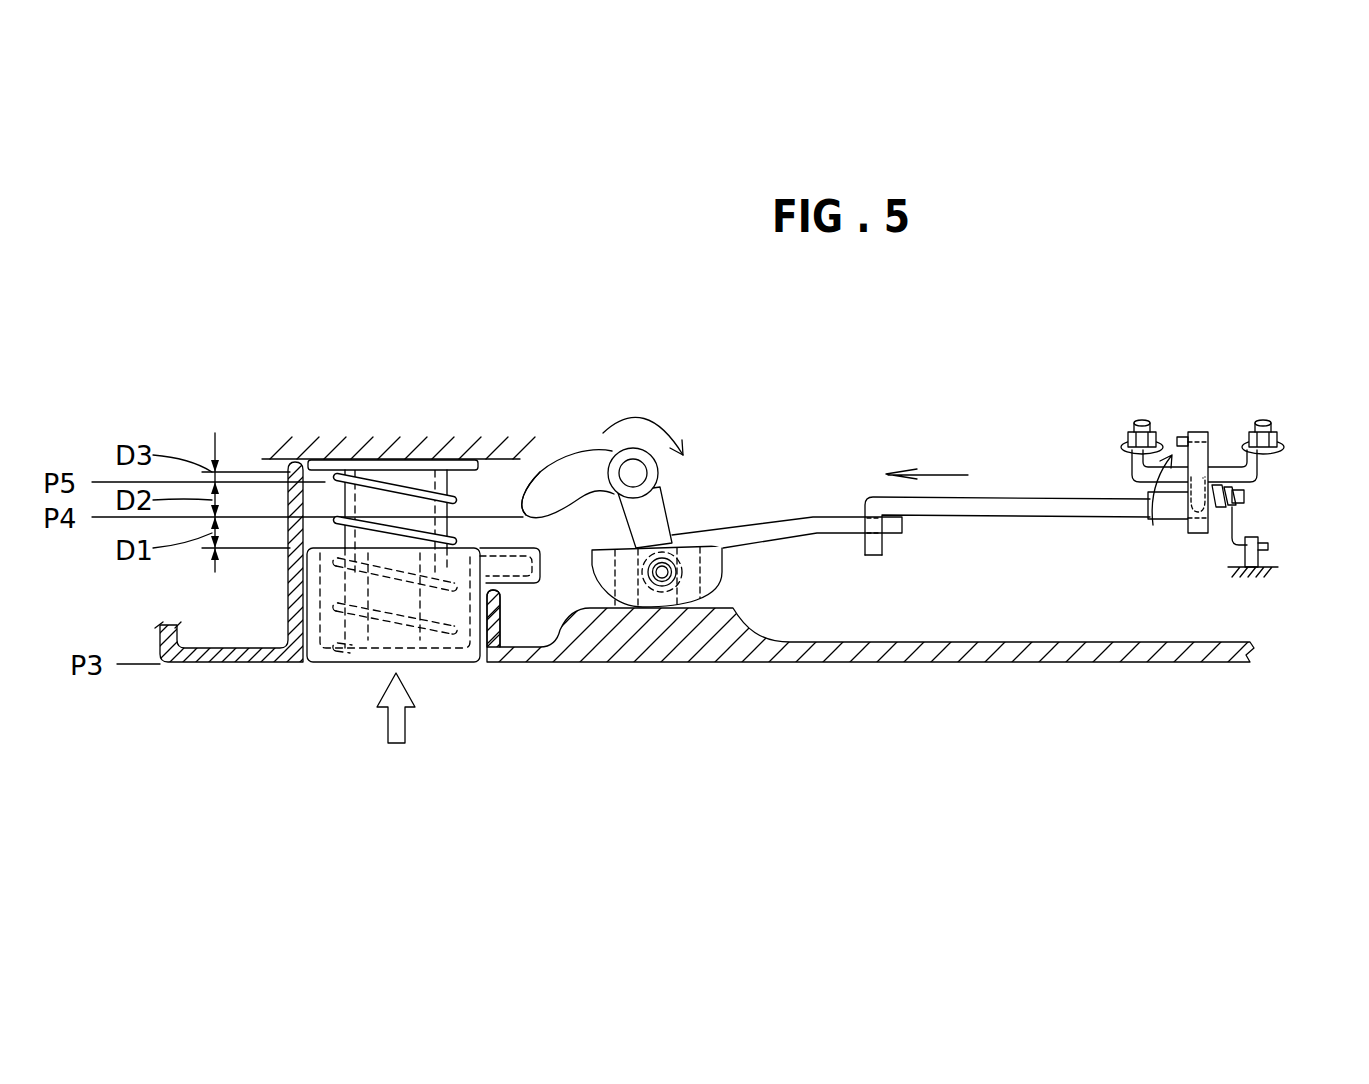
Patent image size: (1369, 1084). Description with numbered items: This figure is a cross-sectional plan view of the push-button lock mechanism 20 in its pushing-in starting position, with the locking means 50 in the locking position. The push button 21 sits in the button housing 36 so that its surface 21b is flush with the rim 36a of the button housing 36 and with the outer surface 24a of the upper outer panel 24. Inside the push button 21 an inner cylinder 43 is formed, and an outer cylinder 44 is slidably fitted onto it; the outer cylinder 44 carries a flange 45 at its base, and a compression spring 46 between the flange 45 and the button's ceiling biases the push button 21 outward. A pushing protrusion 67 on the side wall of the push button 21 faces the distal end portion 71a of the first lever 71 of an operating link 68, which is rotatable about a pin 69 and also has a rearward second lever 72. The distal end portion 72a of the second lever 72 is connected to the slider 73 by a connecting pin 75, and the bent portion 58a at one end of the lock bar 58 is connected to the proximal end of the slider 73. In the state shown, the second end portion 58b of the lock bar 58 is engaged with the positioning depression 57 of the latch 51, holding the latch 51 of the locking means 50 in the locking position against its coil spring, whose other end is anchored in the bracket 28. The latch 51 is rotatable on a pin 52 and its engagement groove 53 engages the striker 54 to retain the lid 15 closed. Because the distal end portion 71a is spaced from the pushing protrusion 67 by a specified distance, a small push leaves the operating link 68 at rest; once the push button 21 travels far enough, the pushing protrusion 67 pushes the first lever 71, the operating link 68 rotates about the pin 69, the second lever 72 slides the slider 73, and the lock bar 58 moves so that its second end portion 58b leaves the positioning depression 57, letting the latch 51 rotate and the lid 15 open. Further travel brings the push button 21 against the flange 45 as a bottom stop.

The lock mechanism 20 is at (555, 348).
The flange 45 is at (323, 458).
The compression spring 46 is at (395, 483).
The outer cylinder 44 is at (438, 476).
The distal end portion of the first lever 71a is at (534, 472).
The first lever 71 is at (578, 458).
The operating link 68 is at (640, 449).
The pin 69 is at (647, 473).
The slider 73 is at (813, 517).
The locking means 50 is at (1132, 405).
The latch 51 is at (1201, 432).
The positioning depression 57 is at (1203, 478).
The striker 54 is at (1267, 467).
The pin 52 is at (1244, 497).
The bracket 28 is at (1257, 560).
The engagement groove 53 is at (1180, 483).
The lock bar 58 is at (1038, 512).
The bent portion 58a is at (872, 555).
The second end portion of the lock bar 58b is at (1187, 500).
The second lever 72 is at (660, 510).
The distal end portion of the second lever 72a is at (677, 588).
The connecting pin 75 is at (658, 590).
The pushing protrusion 67 is at (515, 567).
The lid 15 is at (915, 660).
The upper outer panel 24 is at (1015, 660).
The outer surface of the upper outer panel 24a is at (250, 663).
The button housing 36 is at (320, 578).
The rim of the button housing 36a is at (303, 665).
The push button 21 is at (353, 663).
The surface of the push button 21b is at (380, 663).
The inner cylinder 43 is at (452, 650).